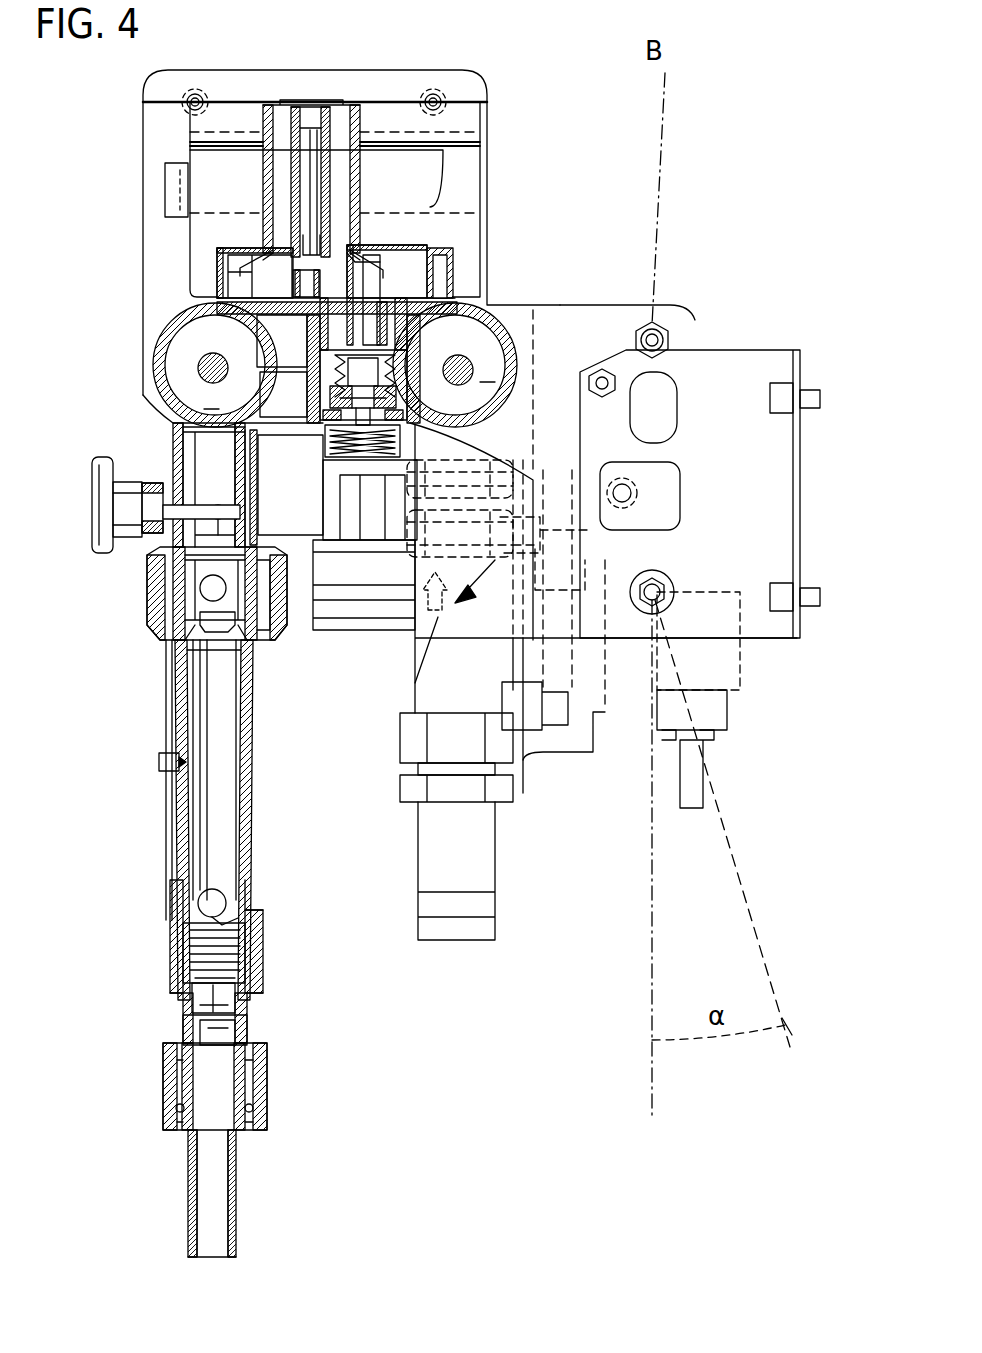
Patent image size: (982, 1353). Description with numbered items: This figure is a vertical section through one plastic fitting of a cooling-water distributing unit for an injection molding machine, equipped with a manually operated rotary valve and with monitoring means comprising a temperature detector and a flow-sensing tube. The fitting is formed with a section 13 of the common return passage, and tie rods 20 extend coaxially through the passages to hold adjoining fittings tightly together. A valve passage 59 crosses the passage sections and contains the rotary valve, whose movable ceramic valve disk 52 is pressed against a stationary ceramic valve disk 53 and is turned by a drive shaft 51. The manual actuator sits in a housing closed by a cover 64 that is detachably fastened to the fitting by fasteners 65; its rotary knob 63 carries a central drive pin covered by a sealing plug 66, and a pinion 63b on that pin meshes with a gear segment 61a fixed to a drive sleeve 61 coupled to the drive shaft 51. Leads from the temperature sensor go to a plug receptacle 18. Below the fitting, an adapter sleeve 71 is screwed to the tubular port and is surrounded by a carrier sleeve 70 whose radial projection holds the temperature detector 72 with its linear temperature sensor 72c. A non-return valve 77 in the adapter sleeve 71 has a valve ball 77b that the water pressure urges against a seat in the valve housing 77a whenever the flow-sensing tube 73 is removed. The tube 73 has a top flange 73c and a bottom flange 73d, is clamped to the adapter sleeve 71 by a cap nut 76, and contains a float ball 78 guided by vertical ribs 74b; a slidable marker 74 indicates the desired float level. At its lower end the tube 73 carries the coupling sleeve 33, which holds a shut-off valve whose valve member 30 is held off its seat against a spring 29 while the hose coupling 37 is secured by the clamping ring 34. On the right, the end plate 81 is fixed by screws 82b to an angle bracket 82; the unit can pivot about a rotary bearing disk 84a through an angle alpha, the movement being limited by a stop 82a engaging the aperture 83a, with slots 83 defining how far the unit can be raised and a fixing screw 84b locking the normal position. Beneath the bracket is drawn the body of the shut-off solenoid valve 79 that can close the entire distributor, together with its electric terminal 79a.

The return passage section 13 is at (165, 336).
The plug receptacle 18 is at (165, 193).
The tie rod 20 is at (228, 368).
The spring 29 is at (183, 956).
The valve member 30 is at (238, 1037).
The coupling sleeve 33 is at (345, 518).
The clamping ring 34 is at (372, 622).
The hose coupling 37 is at (238, 1213).
The drive shaft 51 is at (318, 345).
The movable ceramic valve disk 52 is at (402, 402).
The stationary ceramic valve disk 53 is at (578, 462).
The valve passage 59 is at (283, 396).
The drive sleeve 61 is at (372, 281).
The gear segment 61a is at (362, 250).
The rotary knob 63 is at (357, 125).
The pinion 63b is at (292, 290).
The cover 64 is at (262, 288).
The fastener 65 is at (434, 254).
The sealing plug 66 is at (312, 110).
The carrier sleeve 70 is at (270, 512).
The adapter sleeve 71 is at (170, 407).
The temperature detector 72 is at (100, 483).
The linear temperature sensor 72c is at (170, 482).
The flow-sensing tube 73 is at (272, 834).
The top mounting flange 73c is at (262, 660).
The bottom mounting flange 73d is at (255, 948).
The marker 74 is at (163, 768).
The vertical ribs 74b is at (205, 742).
The cap nut 76 is at (150, 586).
The non-return valve 77 is at (177, 638).
The valve housing 77a is at (173, 672).
The valve ball 77b is at (270, 628).
The float ball 78 is at (225, 898).
The connector body 79 is at (460, 850).
The electric terminal 79a is at (657, 712).
The plate 81 is at (155, 152).
The angle bracket 82 is at (737, 377).
The stop 82a is at (622, 488).
The screw 82b is at (790, 385).
The slot 83 is at (653, 553).
The aperture 83a is at (600, 480).
The rotary bearing disk 84a is at (658, 600).
The fixing screw 84b is at (652, 325).